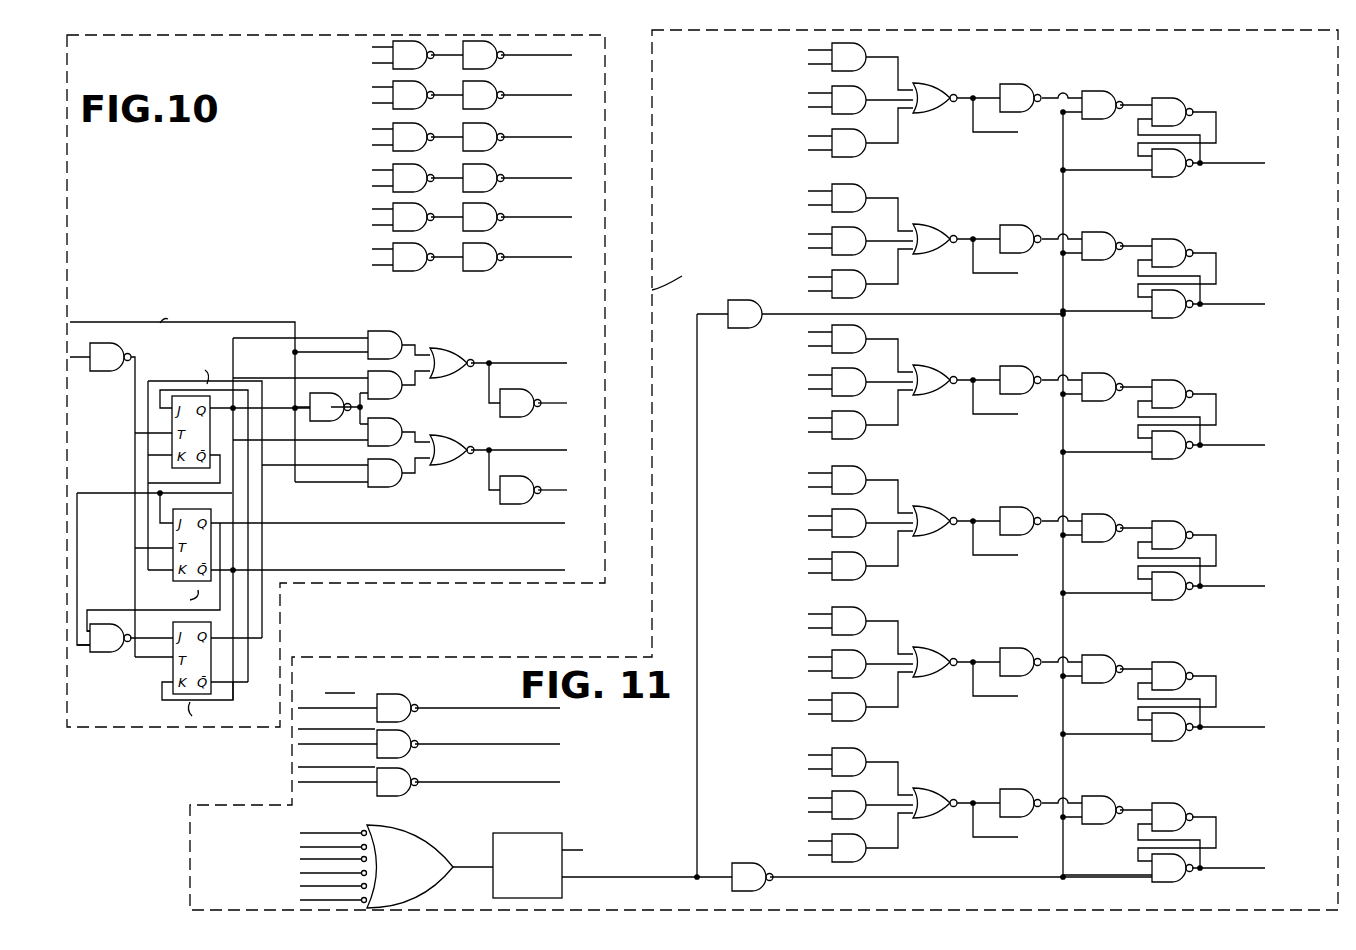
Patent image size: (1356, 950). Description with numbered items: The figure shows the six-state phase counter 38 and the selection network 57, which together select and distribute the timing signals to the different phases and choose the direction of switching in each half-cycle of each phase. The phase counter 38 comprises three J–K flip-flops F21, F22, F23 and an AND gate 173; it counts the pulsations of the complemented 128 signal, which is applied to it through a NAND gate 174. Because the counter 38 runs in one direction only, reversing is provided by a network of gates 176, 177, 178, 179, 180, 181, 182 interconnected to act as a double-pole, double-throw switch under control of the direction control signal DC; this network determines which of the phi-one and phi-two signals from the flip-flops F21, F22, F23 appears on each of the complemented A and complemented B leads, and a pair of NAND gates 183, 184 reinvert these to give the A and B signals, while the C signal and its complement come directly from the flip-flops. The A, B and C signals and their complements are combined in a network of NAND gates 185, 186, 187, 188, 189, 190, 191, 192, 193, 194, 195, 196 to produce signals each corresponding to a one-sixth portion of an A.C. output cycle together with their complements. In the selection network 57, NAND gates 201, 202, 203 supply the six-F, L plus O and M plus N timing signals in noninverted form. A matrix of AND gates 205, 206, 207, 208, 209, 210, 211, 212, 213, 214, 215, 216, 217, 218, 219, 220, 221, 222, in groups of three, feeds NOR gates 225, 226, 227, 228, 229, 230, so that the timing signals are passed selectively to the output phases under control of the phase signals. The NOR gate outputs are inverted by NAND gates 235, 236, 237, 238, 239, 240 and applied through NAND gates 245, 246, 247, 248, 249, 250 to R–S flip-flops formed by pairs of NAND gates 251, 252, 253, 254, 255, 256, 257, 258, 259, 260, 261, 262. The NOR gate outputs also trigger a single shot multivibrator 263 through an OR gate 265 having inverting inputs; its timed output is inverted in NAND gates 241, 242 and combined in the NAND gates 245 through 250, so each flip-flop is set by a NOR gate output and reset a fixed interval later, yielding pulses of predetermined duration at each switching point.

In FIG. 10, the six-state phase counter 38 is at (481, 586).
In FIG. 11, the selection network 57 is at (671, 274).
In FIG. 10, the complemented pulsation signal 128 is at (78, 353).
In FIG. 10, the AND gate 173 is at (116, 652).
In FIG. 10, the NAND gate 174 is at (95, 376).
In FIG. 10, the reversing network gate 176 is at (316, 420).
In FIG. 10, the reversing network gate 177 is at (401, 340).
In FIG. 10, the reversing network gate 178 is at (402, 389).
In FIG. 10, the reversing network gate 179 is at (396, 424).
In FIG. 10, the reversing network gate 180 is at (388, 488).
In FIG. 10, the reversing network gate 181 is at (456, 356).
In FIG. 10, the reversing network gate 182 is at (462, 462).
In FIG. 10, the NAND gate 183 is at (499, 414).
In FIG. 10, the NAND gate 184 is at (496, 490).
In FIG. 10, the NAND gate 185 is at (434, 52).
In FIG. 10, the NAND gate 186 is at (430, 92).
In FIG. 10, the NAND gate 187 is at (430, 134).
In FIG. 10, the NAND gate 188 is at (430, 175).
In FIG. 10, the NAND gate 189 is at (430, 214).
In FIG. 10, the NAND gate 190 is at (394, 254).
In FIG. 10, the NAND gate 191 is at (478, 52).
In FIG. 10, the NAND gate 192 is at (478, 92).
In FIG. 10, the NAND gate 193 is at (478, 134).
In FIG. 10, the NAND gate 194 is at (478, 175).
In FIG. 10, the NAND gate 195 is at (478, 214).
In FIG. 10, the NAND gate 196 is at (478, 254).
In FIG. 10, the J–K flip-flop F21 is at (251, 510).
In FIG. 10, the J–K flip-flop F22 is at (321, 568).
In FIG. 10, the J–K flip-flop F23 is at (196, 673).
In FIG. 11, the NAND gate 201 is at (385, 699).
In FIG. 11, the NAND gate 202 is at (403, 736).
In FIG. 11, the NAND gate 203 is at (403, 774).
In FIG. 11, the AND gate 205 is at (853, 55).
In FIG. 11, the AND gate 206 is at (853, 98).
In FIG. 11, the AND gate 207 is at (853, 141).
In FIG. 11, the AND gate 208 is at (847, 202).
In FIG. 11, the AND gate 209 is at (847, 236).
In FIG. 11, the AND gate 210 is at (847, 274).
In FIG. 11, the AND gate 211 is at (847, 343).
In FIG. 11, the AND gate 212 is at (847, 377).
In FIG. 11, the AND gate 213 is at (847, 415).
In FIG. 11, the AND gate 214 is at (847, 484).
In FIG. 11, the AND gate 215 is at (847, 518).
In FIG. 11, the AND gate 216 is at (847, 556).
In FIG. 11, the AND gate 217 is at (847, 625).
In FIG. 11, the AND gate 218 is at (847, 659).
In FIG. 11, the AND gate 219 is at (847, 697).
In FIG. 11, the AND gate 220 is at (847, 766).
In FIG. 11, the AND gate 221 is at (847, 800).
In FIG. 11, the AND gate 222 is at (847, 838).
In FIG. 11, the NOR gate 225 is at (957, 87).
In FIG. 11, the NOR gate 226 is at (977, 244).
In FIG. 11, the NOR gate 227 is at (977, 385).
In FIG. 11, the NOR gate 228 is at (977, 526).
In FIG. 11, the NOR gate 229 is at (977, 667).
In FIG. 11, the NOR gate 230 is at (977, 808).
In FIG. 11, the NAND gate 235 is at (1039, 87).
In FIG. 11, the NAND gate 236 is at (1041, 230).
In FIG. 11, the NAND gate 237 is at (1041, 371).
In FIG. 11, the NAND gate 238 is at (1041, 512).
In FIG. 11, the NAND gate 239 is at (1041, 653).
In FIG. 11, the NAND gate 240 is at (1041, 794).
In FIG. 11, the NAND gate 241 is at (772, 870).
In FIG. 11, the NAND gate 242 is at (735, 330).
In FIG. 11, the NAND gate 245 is at (1097, 93).
In FIG. 11, the NAND gate 246 is at (1106, 235).
In FIG. 11, the NAND gate 247 is at (1106, 376).
In FIG. 11, the NAND gate 248 is at (1106, 517).
In FIG. 11, the NAND gate 249 is at (1106, 658).
In FIG. 11, the NAND gate 250 is at (1106, 799).
In FIG. 11, the NAND gate 251 is at (1185, 104).
In FIG. 11, the NAND gate 252 is at (1171, 178).
In FIG. 11, the NAND gate 253 is at (1181, 263).
In FIG. 11, the NAND gate 254 is at (1175, 313).
In FIG. 11, the NAND gate 255 is at (1181, 404).
In FIG. 11, the NAND gate 256 is at (1175, 454).
In FIG. 11, the NAND gate 257 is at (1181, 545).
In FIG. 11, the NAND gate 258 is at (1175, 595).
In FIG. 11, the NAND gate 259 is at (1181, 686).
In FIG. 11, the NAND gate 260 is at (1175, 736).
In FIG. 11, the NAND gate 261 is at (1181, 827).
In FIG. 11, the NAND gate 262 is at (1176, 877).
In FIG. 11, the single shot multivibrator 263 is at (512, 833).
In FIG. 11, the OR gate 265 is at (420, 835).